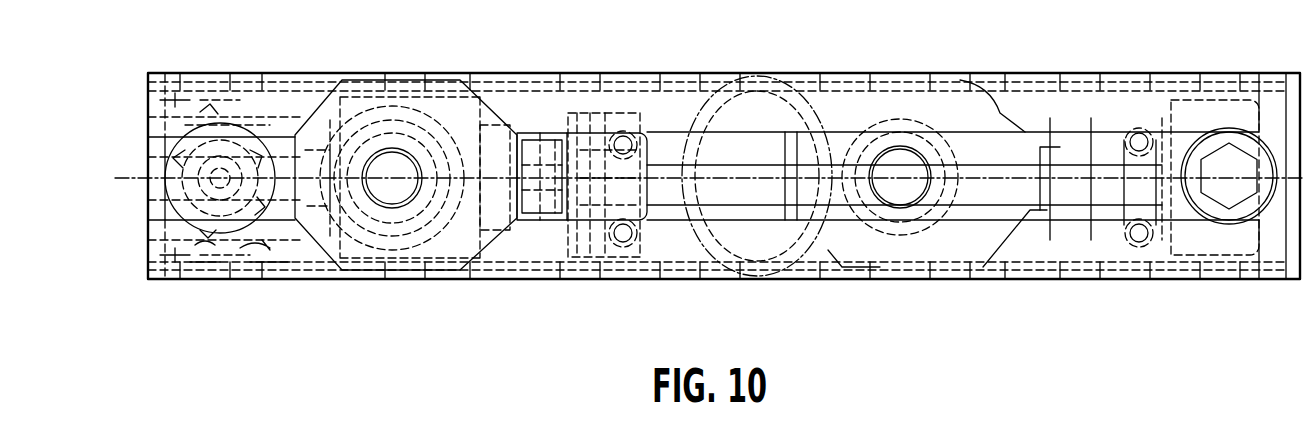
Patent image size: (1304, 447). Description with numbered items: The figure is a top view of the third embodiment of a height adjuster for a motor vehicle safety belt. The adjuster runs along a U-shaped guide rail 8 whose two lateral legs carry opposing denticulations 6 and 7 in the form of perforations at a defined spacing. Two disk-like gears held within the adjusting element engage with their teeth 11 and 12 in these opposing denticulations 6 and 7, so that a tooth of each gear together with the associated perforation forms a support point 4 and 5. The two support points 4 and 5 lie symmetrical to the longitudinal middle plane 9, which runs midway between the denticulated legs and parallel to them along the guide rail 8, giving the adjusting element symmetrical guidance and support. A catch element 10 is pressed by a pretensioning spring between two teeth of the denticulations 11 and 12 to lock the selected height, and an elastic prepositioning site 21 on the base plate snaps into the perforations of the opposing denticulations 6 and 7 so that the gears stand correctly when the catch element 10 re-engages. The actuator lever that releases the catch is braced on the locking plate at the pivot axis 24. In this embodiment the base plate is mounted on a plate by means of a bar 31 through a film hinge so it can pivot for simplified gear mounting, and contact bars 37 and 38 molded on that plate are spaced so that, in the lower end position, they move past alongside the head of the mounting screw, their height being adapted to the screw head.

The support point 4 is at (258, 276).
The support point 5 is at (255, 75).
The opposing denticulation 6 is at (693, 276).
The opposing denticulation 7 is at (690, 75).
The guide rail 8 is at (795, 72).
The longitudinal middle plane 9 is at (1005, 175).
The catch element 10 is at (324, 75).
The teeth 11 is at (205, 282).
The teeth 12 is at (200, 98).
The prepositioning site 21 is at (617, 75).
The pivot axis 24 is at (572, 236).
The bar 31 is at (150, 158).
The contact bar 37 is at (176, 72).
The contact bar 38 is at (175, 288).